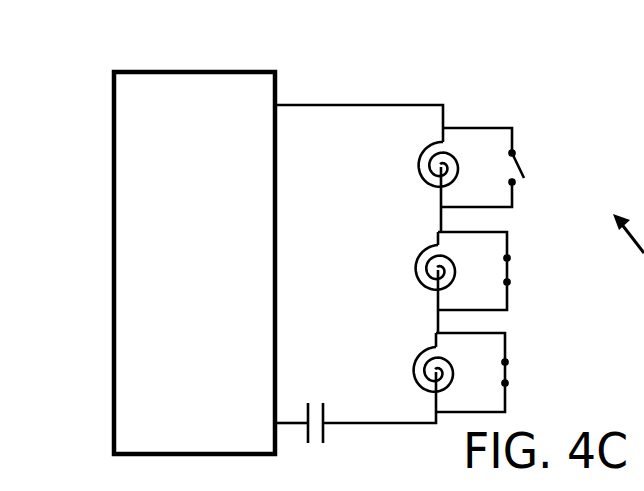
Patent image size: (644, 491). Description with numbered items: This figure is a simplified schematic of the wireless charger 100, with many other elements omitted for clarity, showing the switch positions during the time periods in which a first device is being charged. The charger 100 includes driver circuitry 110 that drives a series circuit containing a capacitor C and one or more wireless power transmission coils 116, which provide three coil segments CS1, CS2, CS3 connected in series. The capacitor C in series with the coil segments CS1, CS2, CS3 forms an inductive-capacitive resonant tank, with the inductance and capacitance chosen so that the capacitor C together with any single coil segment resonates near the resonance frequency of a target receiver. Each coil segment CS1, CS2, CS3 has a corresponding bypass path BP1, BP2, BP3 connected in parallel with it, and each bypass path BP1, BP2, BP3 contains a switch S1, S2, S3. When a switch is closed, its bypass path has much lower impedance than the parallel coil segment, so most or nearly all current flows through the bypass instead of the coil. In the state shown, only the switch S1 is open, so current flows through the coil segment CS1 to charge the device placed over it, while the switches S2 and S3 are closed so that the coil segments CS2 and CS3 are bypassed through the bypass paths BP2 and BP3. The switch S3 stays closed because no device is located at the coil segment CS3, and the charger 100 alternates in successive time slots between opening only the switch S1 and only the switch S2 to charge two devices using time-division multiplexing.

The charger 100 is at (94, 133).
The driver circuitry 110 is at (194, 263).
The wireless power transmission coils 116 is at (483, 73).
The capacitor C is at (326, 435).
The bypass path BP1 is at (461, 128).
The bypass path BP2 is at (487, 230).
The bypass path BP3 is at (490, 332).
The switch S1 is at (529, 159).
The switch S2 is at (528, 255).
The switch S3 is at (527, 360).
The coil segment CS1 is at (408, 187).
The coil segment CS2 is at (403, 282).
The coil segment CS3 is at (400, 365).